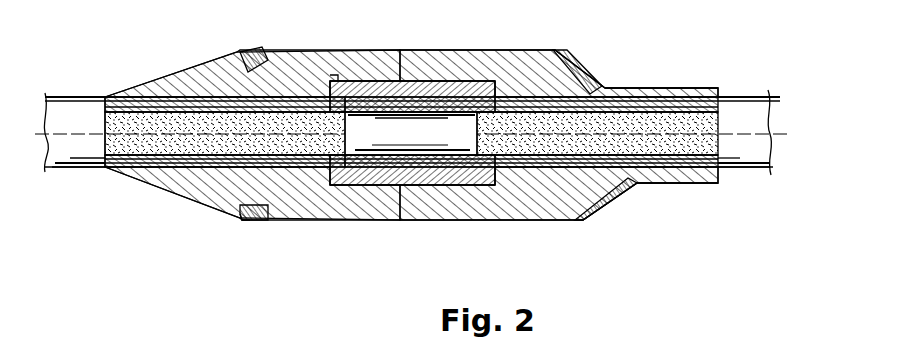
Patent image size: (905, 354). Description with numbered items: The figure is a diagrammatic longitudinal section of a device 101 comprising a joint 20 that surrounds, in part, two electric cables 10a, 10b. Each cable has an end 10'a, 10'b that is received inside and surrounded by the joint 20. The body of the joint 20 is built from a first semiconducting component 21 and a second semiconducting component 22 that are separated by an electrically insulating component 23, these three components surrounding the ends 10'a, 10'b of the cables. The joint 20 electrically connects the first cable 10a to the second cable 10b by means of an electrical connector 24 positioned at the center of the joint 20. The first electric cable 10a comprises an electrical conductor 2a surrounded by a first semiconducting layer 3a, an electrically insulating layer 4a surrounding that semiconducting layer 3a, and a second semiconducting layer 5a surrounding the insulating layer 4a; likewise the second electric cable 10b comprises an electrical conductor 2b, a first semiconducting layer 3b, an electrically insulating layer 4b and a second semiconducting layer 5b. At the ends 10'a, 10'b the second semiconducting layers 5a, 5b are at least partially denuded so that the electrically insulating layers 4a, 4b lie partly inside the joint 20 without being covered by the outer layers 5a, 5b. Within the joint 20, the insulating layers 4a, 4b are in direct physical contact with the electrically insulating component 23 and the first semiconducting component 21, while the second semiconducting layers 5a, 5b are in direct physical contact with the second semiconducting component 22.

The device 101 is at (125, 248).
The joint 20 is at (415, 229).
The first semiconducting component 21 is at (449, 80).
The second semiconducting component 22 is at (252, 50).
The electrically insulating component 23 is at (334, 72).
The electrical connector 24 is at (394, 105).
The electrical conductor 2a is at (341, 219).
The electrical conductor 2b is at (478, 219).
The first semiconducting layer 3a is at (135, 96).
The first semiconducting layer 3b is at (523, 105).
The electrically insulating layer 4a is at (244, 207).
The electrically insulating layer 4b is at (637, 203).
The second semiconducting layer 5a is at (85, 105).
The second semiconducting layer 5b is at (748, 110).
The first electric cable 10a is at (82, 190).
The second electric cable 10b is at (721, 195).
The end of first electric cable 10'a is at (225, 189).
The end of second electric cable 10'b is at (597, 189).